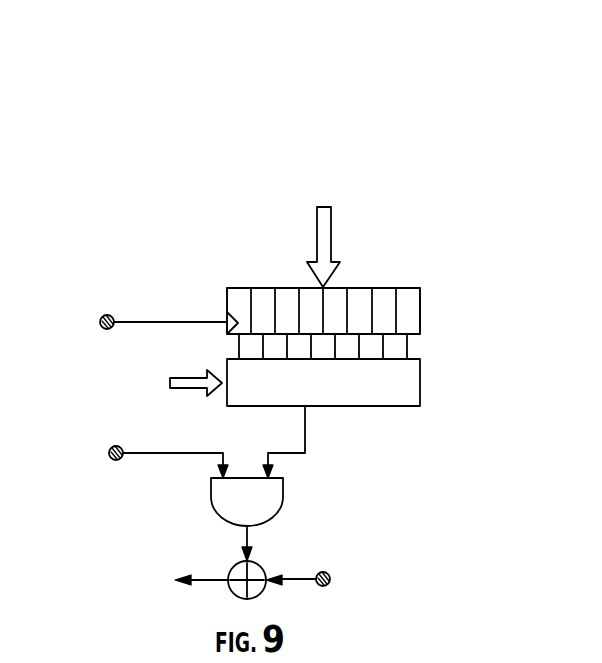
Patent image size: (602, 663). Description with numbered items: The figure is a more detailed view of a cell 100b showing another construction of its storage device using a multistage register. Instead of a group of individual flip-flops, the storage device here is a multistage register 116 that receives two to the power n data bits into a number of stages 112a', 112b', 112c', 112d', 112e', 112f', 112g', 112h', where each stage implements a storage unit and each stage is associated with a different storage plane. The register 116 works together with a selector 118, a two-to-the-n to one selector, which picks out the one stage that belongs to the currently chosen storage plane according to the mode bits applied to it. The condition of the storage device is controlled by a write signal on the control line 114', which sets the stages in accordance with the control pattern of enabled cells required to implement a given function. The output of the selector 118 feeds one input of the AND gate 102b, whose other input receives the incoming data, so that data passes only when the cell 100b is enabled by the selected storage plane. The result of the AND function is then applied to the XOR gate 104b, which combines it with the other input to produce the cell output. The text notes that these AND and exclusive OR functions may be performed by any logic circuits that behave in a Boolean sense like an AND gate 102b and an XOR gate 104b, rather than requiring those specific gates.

The cell 100b is at (406, 118).
The stage 112a' is at (242, 285).
The stage 112b' is at (281, 272).
The stage 112c' is at (326, 272).
The stage 112d' is at (362, 263).
The stage 112e' is at (365, 289).
The stage 112f' is at (405, 277).
The stage 112g' is at (453, 263).
The stage 112h' is at (459, 291).
The control line 114' is at (150, 303).
The multistage register 116 is at (420, 323).
The selector 118 is at (421, 380).
The AND gate 102b is at (284, 497).
The XOR gate 104b is at (259, 562).